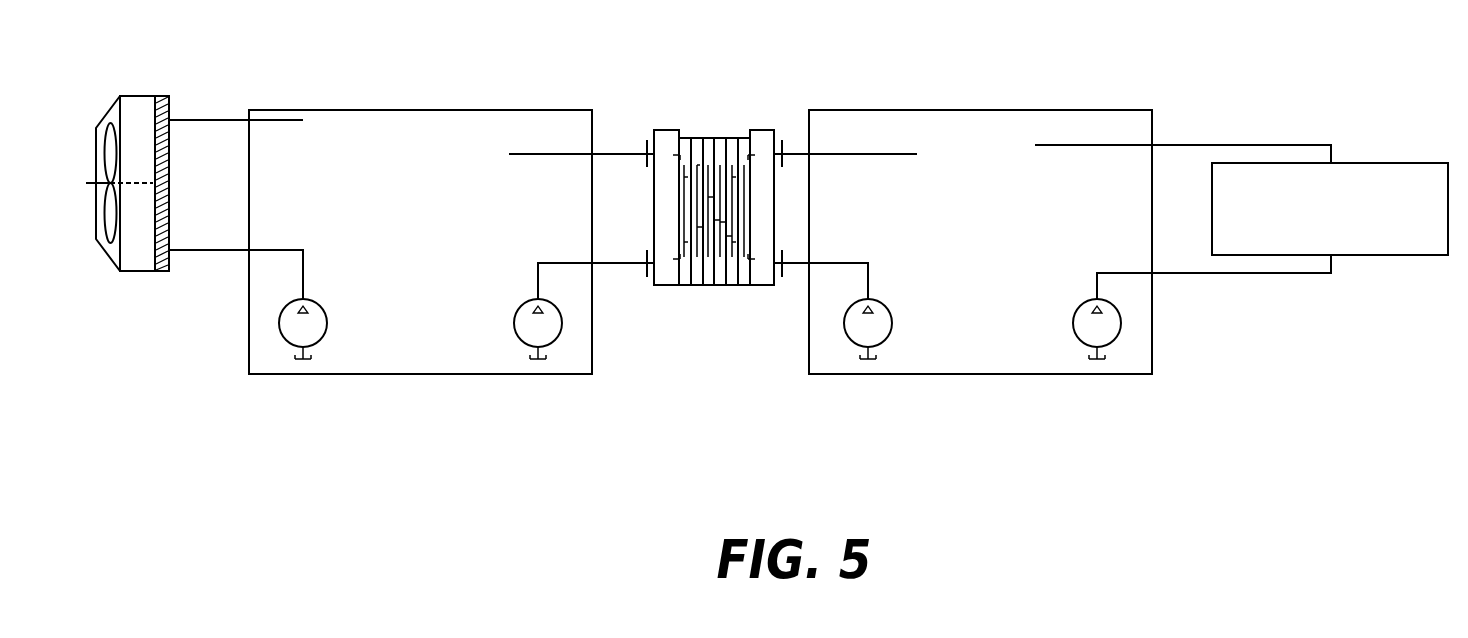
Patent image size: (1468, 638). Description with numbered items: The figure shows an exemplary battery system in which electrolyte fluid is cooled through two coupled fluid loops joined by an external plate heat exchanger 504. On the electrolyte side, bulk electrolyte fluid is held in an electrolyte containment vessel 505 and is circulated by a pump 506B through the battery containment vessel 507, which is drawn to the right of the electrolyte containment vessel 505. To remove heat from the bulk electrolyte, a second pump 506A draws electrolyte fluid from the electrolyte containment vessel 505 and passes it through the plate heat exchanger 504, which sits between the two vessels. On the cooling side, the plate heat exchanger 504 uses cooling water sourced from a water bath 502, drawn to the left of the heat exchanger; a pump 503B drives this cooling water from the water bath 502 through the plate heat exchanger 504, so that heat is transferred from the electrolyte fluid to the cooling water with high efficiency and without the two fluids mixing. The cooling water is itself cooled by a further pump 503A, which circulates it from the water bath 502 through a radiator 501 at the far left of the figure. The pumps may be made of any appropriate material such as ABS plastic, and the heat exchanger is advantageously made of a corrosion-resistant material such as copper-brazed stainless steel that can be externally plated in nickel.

The radiator 501 is at (140, 271).
The water bath 502 is at (449, 374).
The pump 503A is at (315, 345).
The pump 503B is at (553, 345).
The external plate heat exchanger 504 is at (714, 137).
The electrolyte containment vessel 505 is at (1013, 374).
The pump 506A is at (880, 345).
The pump 506B is at (1109, 345).
The battery containment vessel 507 is at (1360, 255).